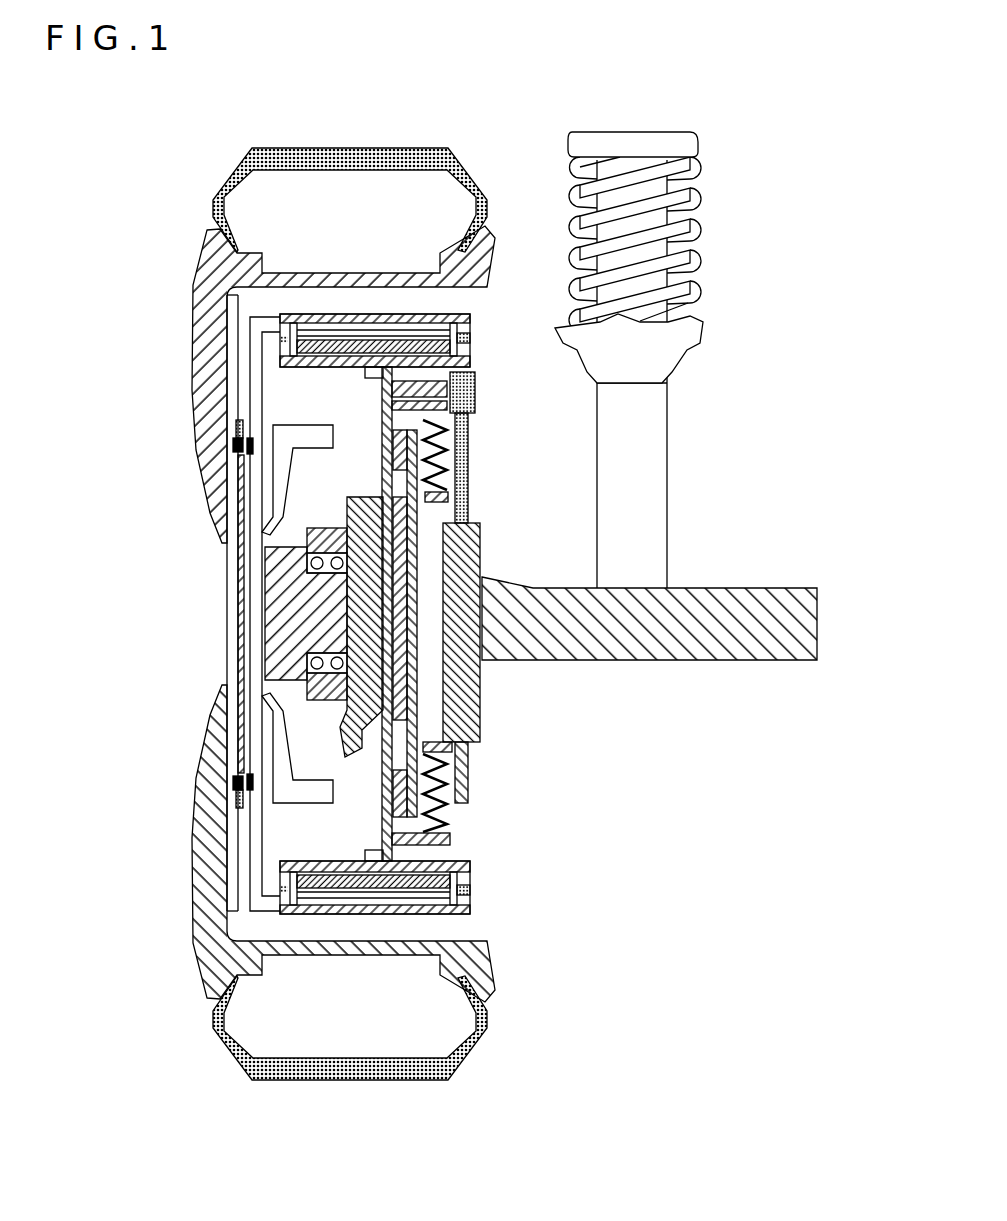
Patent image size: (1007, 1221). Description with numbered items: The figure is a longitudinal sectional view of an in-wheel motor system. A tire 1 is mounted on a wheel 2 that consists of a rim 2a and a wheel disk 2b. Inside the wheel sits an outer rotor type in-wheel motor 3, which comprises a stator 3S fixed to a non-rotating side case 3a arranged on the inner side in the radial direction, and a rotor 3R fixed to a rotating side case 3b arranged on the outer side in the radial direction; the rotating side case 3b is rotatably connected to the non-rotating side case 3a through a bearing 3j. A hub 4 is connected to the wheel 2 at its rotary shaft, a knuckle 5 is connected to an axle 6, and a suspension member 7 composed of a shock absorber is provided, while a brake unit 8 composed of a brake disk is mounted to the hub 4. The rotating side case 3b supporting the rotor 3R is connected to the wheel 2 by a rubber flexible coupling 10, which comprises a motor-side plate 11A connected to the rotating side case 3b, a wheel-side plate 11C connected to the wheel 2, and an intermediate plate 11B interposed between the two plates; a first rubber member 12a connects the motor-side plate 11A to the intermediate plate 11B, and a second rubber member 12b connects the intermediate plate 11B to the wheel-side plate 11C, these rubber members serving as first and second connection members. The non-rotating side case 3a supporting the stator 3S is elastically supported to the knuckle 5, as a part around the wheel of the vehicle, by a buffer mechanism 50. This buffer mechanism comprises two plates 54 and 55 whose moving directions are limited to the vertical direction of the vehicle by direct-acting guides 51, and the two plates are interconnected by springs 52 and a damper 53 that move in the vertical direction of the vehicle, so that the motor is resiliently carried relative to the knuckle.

The tire 1 is at (418, 155).
The wheel 2 is at (285, 573).
The rim 2a is at (214, 228).
The wheel disk 2b is at (217, 515).
The in-wheel motor 3 is at (418, 552).
The stator 3S is at (353, 342).
The rotor 3R is at (383, 327).
The non-rotating side case 3a is at (468, 368).
The rotating side case 3b is at (456, 318).
The bearing 3j is at (472, 338).
The hub 4 is at (325, 628).
The knuckle 5 is at (360, 745).
The axle 6 is at (713, 592).
The suspension member 7 is at (668, 265).
The brake unit 8 is at (250, 772).
The rubber flexible coupling 10 is at (189, 556).
The motor-side plate 11A is at (258, 618).
The intermediate plate 11B is at (262, 510).
The wheel-side plate 11C is at (230, 335).
The first rubber member 12a is at (236, 447).
The second rubber member 12b is at (229, 429).
The buffer mechanism 50 is at (458, 621).
The direct-acting guide 51 is at (383, 452).
The spring 52 is at (468, 482).
The damper 53 is at (472, 568).
The plate 54 is at (398, 458).
The plate 55 is at (410, 492).